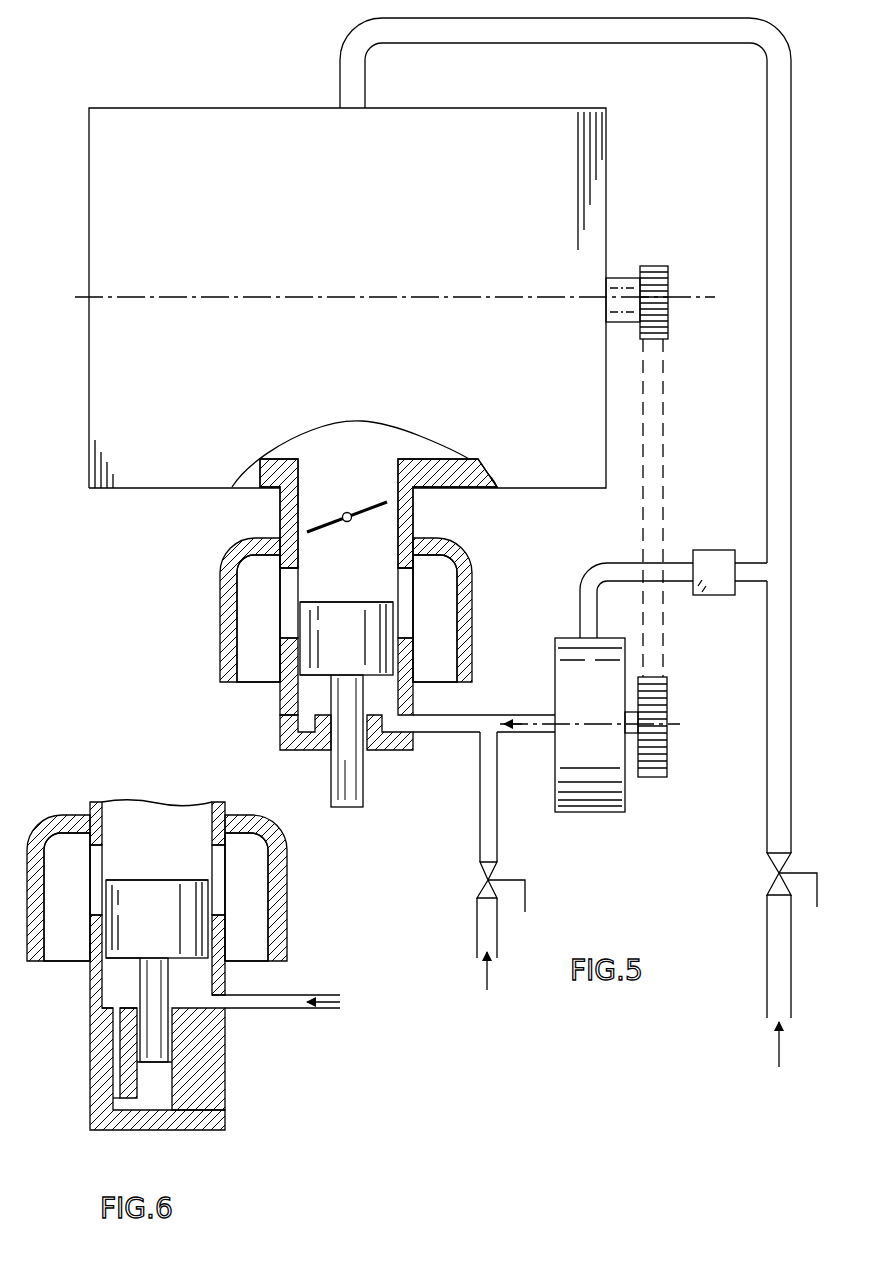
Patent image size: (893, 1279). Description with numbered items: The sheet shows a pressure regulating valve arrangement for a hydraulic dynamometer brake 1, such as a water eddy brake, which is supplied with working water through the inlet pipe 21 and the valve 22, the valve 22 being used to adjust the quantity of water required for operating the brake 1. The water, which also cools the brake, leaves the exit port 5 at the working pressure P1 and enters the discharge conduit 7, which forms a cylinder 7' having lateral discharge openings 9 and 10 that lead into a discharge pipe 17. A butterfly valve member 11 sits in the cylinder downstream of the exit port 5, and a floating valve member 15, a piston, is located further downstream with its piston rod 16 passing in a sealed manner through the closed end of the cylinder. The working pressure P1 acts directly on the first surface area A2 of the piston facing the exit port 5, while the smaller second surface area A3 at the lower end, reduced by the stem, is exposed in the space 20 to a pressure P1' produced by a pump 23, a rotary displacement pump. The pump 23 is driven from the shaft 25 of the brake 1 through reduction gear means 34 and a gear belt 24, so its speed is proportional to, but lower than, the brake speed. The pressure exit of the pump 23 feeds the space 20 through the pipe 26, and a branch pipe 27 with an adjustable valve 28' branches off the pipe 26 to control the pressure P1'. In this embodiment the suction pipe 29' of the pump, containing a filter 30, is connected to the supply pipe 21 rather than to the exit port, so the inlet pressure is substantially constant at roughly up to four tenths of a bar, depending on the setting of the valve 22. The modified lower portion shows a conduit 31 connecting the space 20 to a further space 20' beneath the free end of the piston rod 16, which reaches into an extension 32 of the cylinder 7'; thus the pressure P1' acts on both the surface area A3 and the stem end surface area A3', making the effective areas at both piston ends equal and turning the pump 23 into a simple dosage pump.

In FIG. 5, the hydraulic dynamometer brake 1 is at (305, 112).
In FIG. 5, the exit port 5 is at (398, 471).
In FIG. 5, the discharge conduit 7 is at (268, 587).
In FIG. 5, the cylinder 7' is at (427, 676).
In FIG. 6, the cylinder 7' is at (133, 905).
In FIG. 5, the discharge opening 9 is at (415, 613).
In FIG. 6, the discharge opening 9 is at (222, 884).
In FIG. 5, the discharge opening 10 is at (290, 596).
In FIG. 6, the discharge opening 10 is at (92, 869).
In FIG. 5, the butterfly valve member 11 is at (346, 513).
In FIG. 5, the valve member 15 is at (360, 602).
In FIG. 6, the valve member 15 is at (157, 919).
In FIG. 5, the piston rod 16 is at (363, 778).
In FIG. 6, the piston rod 16 is at (168, 1060).
In FIG. 5, the discharge pipe 17 is at (224, 637).
In FIG. 6, the discharge pipe 17 is at (288, 906).
In FIG. 5, the space 20 is at (327, 739).
In FIG. 6, the space 20 is at (87, 1017).
In FIG. 6, the further space 20' is at (182, 1116).
In FIG. 5, the inlet pipe 21 is at (767, 369).
In FIG. 5, the valve 22 is at (777, 874).
In FIG. 5, the pump 23 is at (625, 810).
In FIG. 5, the gear belt 24 is at (662, 438).
In FIG. 5, the shaft 25 is at (619, 278).
In FIG. 5, the pipe 26 is at (433, 733).
In FIG. 6, the pipe 26 is at (268, 1010).
In FIG. 5, the branch pipe 27 is at (480, 826).
In FIG. 5, the valve 28' is at (514, 909).
In FIG. 5, the inlet pipe 29' is at (619, 591).
In FIG. 5, the filter 30 is at (736, 551).
In FIG. 6, the conduit 31 is at (120, 1049).
In FIG. 6, the extension 32 is at (92, 1119).
In FIG. 5, the reduction gear means 34 is at (668, 292).
In FIG. 5, the first surface area A2 is at (338, 602).
In FIG. 6, the first surface area A2 is at (158, 880).
In FIG. 5, the second surface area A3 is at (284, 700).
In FIG. 6, the second surface area A3 is at (120, 980).
In FIG. 6, the stem end surface area A3' is at (139, 1118).
In FIG. 5, the working pressure P1 is at (363, 488).
In FIG. 6, the working pressure P1 is at (127, 847).
In FIG. 5, the pump pressure P1' is at (383, 699).
In FIG. 6, the pump pressure P1' is at (189, 986).